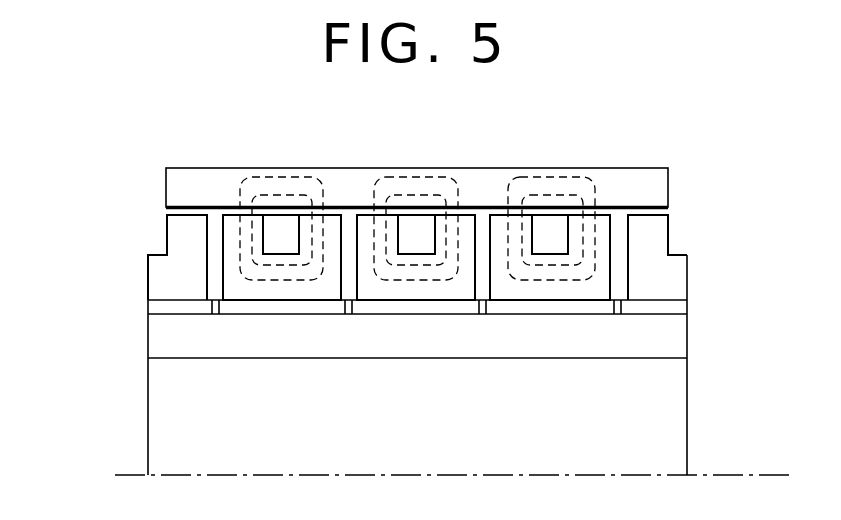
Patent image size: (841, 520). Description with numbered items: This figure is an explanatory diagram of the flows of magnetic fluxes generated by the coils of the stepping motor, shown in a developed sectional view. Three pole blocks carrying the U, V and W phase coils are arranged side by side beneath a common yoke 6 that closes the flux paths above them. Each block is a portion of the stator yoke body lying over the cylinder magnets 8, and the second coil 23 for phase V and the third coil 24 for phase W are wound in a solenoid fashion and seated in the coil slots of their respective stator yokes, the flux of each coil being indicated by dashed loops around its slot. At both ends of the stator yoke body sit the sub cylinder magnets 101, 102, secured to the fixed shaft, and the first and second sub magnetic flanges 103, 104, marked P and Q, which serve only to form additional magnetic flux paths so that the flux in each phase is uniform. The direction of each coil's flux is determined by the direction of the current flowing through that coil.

The yoke 6 is at (495, 188).
The cylinder magnet 8 is at (262, 307).
The second coil 23 is at (283, 220).
The third coil 24 is at (558, 218).
The sub cylinder magnet 101 is at (158, 307).
The sub cylinder magnet 102 is at (672, 305).
The first sub magnetic flange 103 is at (186, 256).
The second sub magnetic flange 104 is at (669, 269).